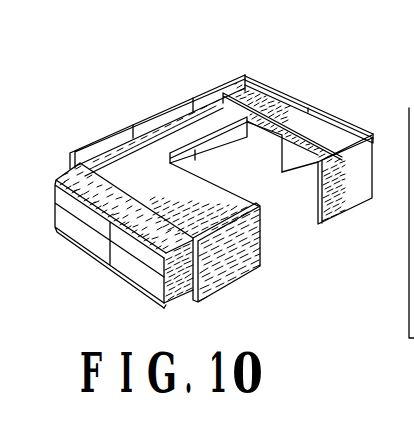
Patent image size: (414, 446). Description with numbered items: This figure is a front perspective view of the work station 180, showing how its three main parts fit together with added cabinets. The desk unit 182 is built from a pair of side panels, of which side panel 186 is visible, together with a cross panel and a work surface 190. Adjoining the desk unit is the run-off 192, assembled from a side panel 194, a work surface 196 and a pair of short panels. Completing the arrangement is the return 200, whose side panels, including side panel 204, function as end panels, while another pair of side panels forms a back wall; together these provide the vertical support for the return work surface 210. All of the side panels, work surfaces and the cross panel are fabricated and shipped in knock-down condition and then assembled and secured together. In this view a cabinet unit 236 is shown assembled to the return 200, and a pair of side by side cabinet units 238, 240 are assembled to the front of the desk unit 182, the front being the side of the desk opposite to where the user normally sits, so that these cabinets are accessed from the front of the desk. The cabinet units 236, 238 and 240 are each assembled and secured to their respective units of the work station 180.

The work station 180 is at (345, 116).
The desk unit 182 is at (97, 128).
The side panel 186 is at (245, 252).
The work surface 190 is at (170, 183).
The run-off 192 is at (222, 62).
The side panel 194 is at (173, 95).
The work surface 196 is at (214, 118).
The return 200 is at (334, 108).
The side panel 204 is at (362, 191).
The return work surface 210 is at (282, 117).
The cabinet unit 236 is at (308, 177).
The cabinet unit 238 is at (95, 238).
The cabinet unit 240 is at (150, 275).